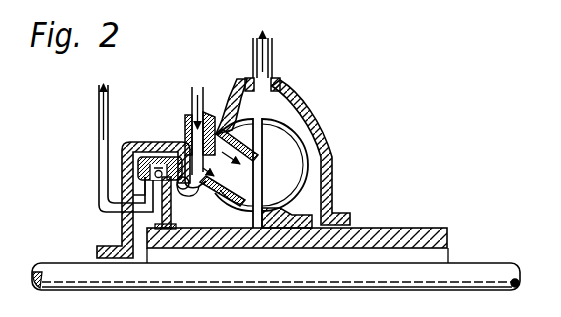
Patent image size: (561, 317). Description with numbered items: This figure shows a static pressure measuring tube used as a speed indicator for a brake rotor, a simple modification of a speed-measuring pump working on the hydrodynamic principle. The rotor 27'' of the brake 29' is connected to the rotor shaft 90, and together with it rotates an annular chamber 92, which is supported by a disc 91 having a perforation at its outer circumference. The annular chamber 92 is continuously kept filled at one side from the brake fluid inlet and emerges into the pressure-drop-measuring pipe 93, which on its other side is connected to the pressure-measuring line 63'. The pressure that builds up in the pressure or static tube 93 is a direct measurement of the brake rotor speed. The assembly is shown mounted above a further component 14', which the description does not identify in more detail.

The base plate 14' is at (276, 290).
The rotor shaft 90 is at (438, 236).
The pressure-drop-measuring pipe 93 is at (147, 197).
The pressure-measuring line 63' is at (127, 148).
The annular chamber 92 is at (152, 158).
The disc 91 is at (174, 212).
The brake 29' is at (292, 129).
The rotor 27'' is at (310, 165).